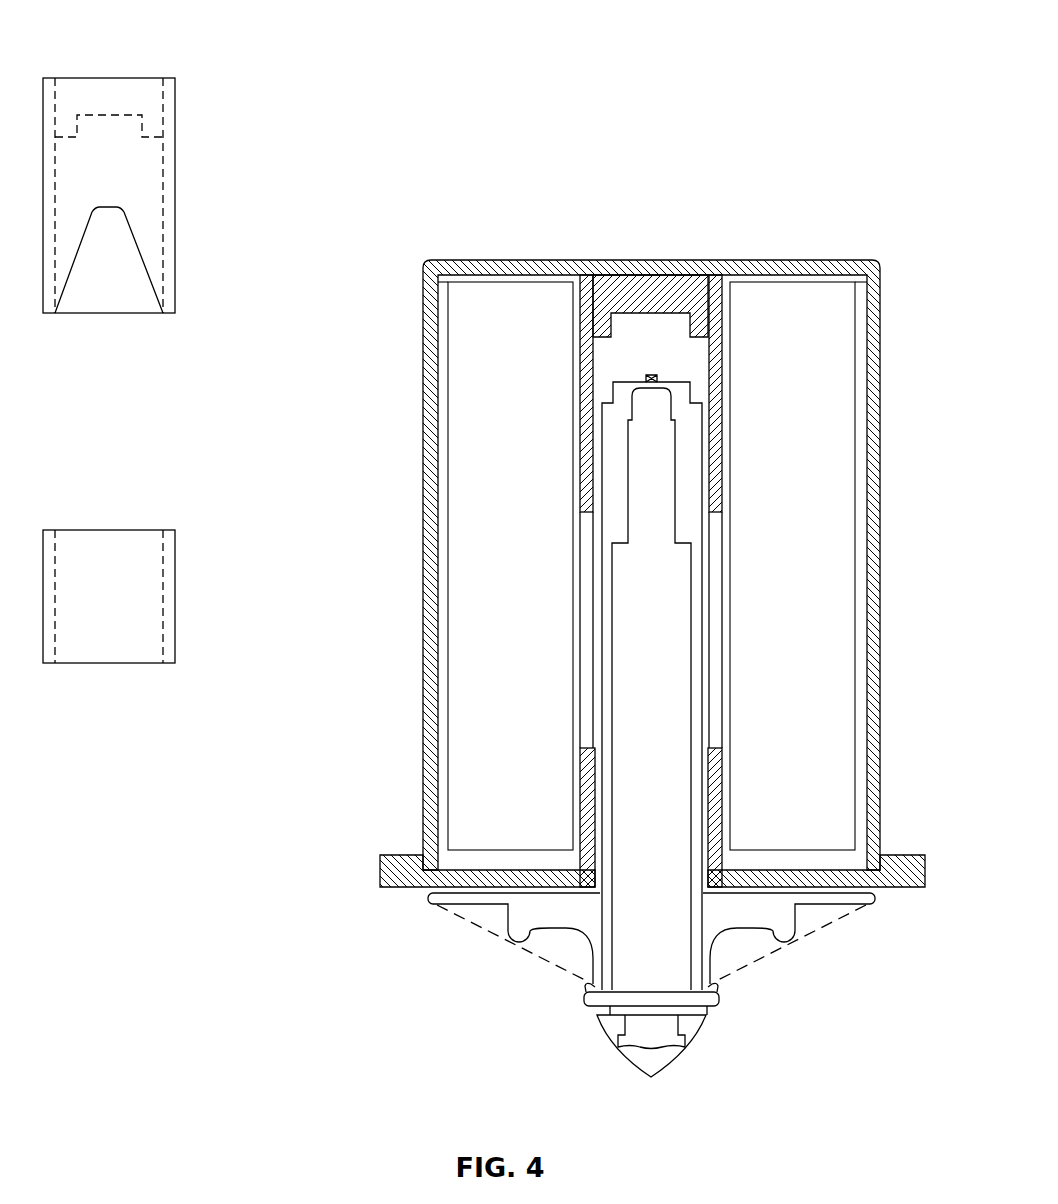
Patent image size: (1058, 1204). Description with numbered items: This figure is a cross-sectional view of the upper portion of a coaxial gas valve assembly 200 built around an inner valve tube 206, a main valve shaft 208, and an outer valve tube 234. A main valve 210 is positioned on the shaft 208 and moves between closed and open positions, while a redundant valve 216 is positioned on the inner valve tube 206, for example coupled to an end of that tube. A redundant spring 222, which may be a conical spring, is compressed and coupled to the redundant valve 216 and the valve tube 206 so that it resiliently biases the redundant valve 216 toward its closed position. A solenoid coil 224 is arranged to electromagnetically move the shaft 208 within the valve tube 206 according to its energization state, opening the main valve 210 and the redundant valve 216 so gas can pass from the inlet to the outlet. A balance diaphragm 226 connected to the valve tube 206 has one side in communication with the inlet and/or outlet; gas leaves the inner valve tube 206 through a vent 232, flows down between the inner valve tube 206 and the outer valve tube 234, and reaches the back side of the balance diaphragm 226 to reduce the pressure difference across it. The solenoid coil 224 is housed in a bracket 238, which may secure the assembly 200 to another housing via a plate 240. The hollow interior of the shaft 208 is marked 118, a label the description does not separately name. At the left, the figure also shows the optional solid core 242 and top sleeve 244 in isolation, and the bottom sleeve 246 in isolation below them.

The coaxial gas valve assembly 200 is at (807, 133).
The bracket 238 is at (815, 270).
The solenoid coil 224 is at (481, 554).
The plate 240 is at (905, 878).
The solid core 242 is at (147, 99).
The top sleeve 244 is at (123, 201).
The bottom sleeve 246 is at (167, 532).
The outer valve tube 234 is at (680, 357).
The inner valve tube 206 is at (690, 448).
The vent 232 is at (651, 379).
The main valve shaft 208 is at (652, 595).
The bore 118 is at (631, 979).
The balance diaphragm 226 is at (530, 918).
The redundant spring 222 is at (780, 951).
The redundant valve 216 is at (712, 1000).
The main valve 210 is at (652, 1057).